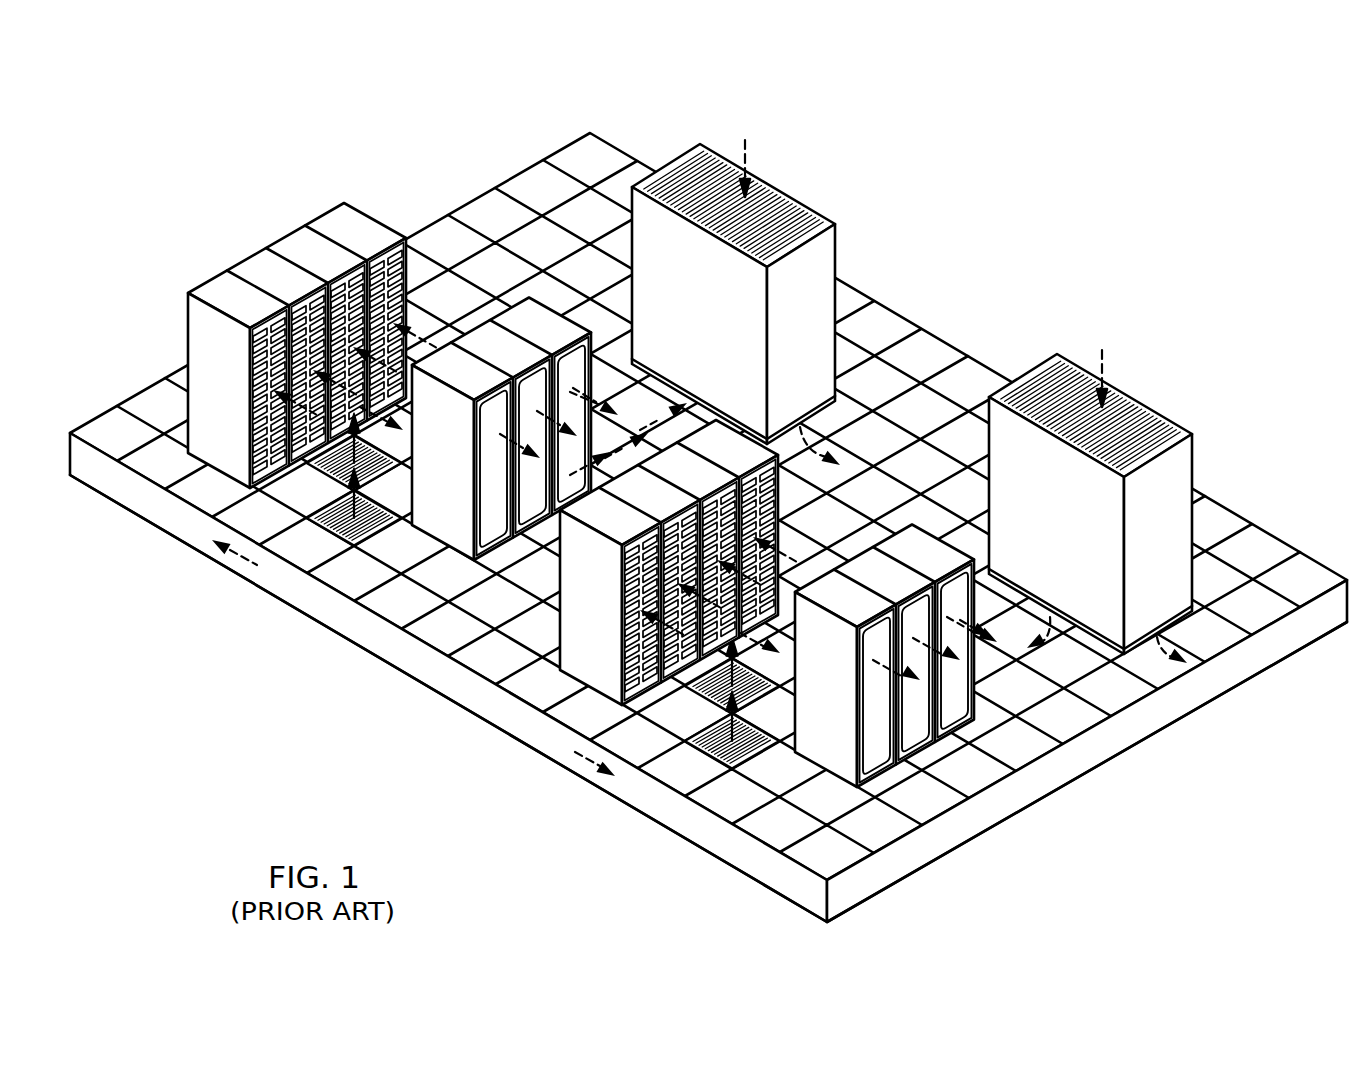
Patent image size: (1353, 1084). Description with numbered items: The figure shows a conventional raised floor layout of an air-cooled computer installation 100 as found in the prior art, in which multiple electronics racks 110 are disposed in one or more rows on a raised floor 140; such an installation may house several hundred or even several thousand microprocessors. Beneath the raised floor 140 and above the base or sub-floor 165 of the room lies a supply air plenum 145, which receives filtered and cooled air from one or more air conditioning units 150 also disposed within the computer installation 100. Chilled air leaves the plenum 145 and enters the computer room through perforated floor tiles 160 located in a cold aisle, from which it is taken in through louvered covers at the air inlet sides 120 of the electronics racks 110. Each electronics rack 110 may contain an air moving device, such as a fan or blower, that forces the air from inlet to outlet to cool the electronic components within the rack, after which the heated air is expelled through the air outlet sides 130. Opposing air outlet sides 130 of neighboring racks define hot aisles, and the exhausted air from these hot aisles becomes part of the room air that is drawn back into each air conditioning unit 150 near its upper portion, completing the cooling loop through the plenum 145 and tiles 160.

The computer installation 100 is at (469, 132).
The electronics rack 110 is at (332, 319).
The air inlet side 120 is at (392, 284).
The air outlet side 130 is at (537, 503).
The raised floor 140 is at (1293, 548).
The supply air plenum 145 is at (1055, 770).
The air conditioning unit 150 is at (838, 214).
The perforated floor tile 160 is at (330, 507).
The sub-floor 165 is at (921, 870).